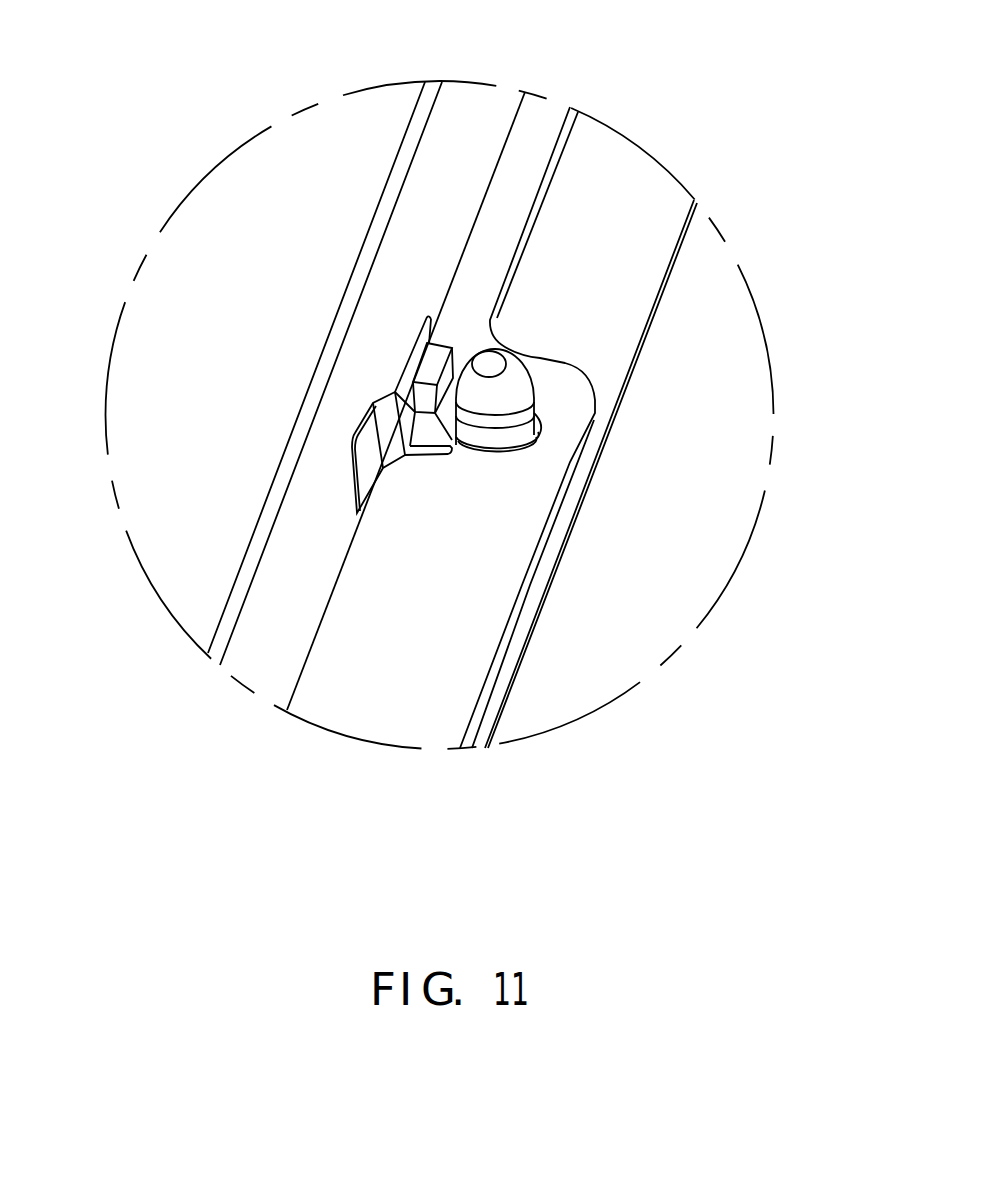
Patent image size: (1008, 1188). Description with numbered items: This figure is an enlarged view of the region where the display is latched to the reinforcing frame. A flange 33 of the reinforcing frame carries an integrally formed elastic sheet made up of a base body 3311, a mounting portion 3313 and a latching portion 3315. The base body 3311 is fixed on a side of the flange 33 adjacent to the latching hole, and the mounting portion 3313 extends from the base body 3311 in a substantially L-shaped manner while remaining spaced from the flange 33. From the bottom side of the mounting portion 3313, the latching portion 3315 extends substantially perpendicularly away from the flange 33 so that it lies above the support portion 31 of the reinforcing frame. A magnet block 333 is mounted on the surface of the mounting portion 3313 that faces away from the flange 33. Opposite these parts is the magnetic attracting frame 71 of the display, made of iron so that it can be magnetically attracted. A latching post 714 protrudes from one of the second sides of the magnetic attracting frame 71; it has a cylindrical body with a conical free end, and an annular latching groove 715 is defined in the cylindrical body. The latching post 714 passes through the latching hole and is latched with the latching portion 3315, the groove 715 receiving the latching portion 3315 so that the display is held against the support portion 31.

The support portion 31 is at (462, 643).
The flange 33 is at (247, 434).
The magnet block 333 is at (437, 353).
The base body 3311 is at (362, 435).
The mounting portion 3313 is at (410, 347).
The latching portion 3315 is at (435, 445).
The magnetic attracting frame 71 is at (610, 175).
The latching post 714 is at (512, 392).
The annular latching groove 715 is at (483, 457).